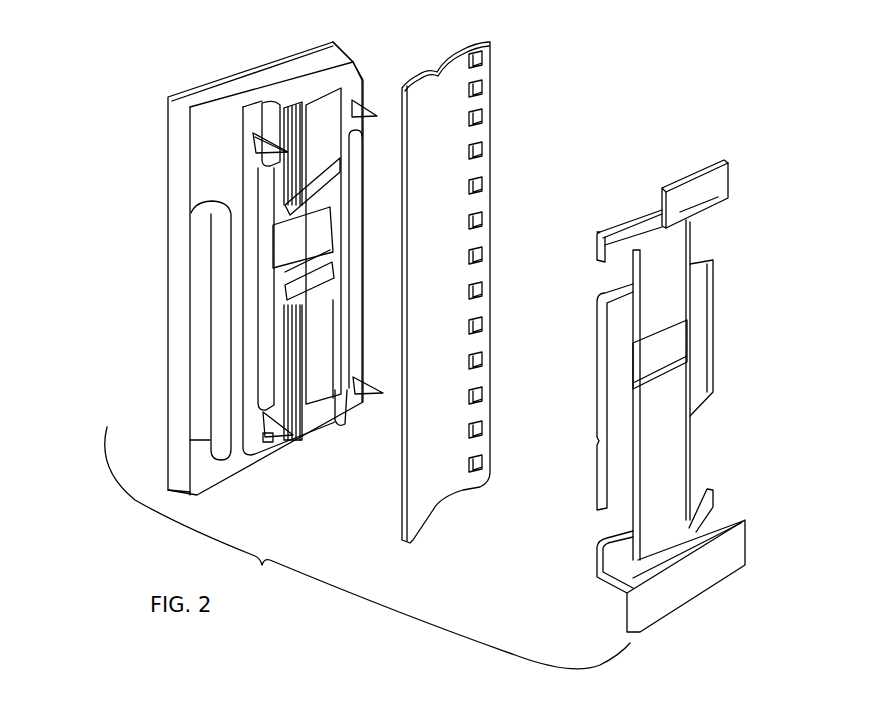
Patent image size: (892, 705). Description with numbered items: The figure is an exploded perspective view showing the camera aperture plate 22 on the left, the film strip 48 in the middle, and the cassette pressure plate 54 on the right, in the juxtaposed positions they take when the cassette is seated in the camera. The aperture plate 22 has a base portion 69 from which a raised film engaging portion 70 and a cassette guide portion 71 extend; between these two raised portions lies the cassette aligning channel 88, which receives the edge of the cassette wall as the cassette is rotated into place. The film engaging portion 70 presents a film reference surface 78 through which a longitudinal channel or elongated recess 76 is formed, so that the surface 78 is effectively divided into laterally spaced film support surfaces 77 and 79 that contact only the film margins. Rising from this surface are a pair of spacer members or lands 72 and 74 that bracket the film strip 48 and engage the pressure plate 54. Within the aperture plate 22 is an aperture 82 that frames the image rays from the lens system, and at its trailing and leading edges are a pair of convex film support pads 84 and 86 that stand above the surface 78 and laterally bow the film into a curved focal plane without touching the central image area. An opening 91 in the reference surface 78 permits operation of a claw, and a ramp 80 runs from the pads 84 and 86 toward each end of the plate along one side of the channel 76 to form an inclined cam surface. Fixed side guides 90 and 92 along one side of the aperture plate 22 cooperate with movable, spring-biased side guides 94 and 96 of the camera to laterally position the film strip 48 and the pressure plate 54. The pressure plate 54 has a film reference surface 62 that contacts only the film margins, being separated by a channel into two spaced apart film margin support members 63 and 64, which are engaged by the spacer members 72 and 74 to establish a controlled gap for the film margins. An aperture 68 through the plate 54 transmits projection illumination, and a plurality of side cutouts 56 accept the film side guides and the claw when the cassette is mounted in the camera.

The aperture plate 22 is at (217, 72).
The base portion 69 is at (178, 160).
The cassette guide portion 71 is at (200, 233).
The cassette aligning channel 88 is at (238, 270).
The spacer member 72 is at (267, 387).
The film support surface 77 is at (267, 117).
The movable side guide 96 is at (254, 142).
The ramp 80 is at (290, 110).
The aperture 82 is at (323, 232).
The film support pad 84 is at (310, 267).
The film engaging portion 70 is at (313, 83).
The film support pad 86 is at (345, 178).
The spacer member 74 is at (363, 331).
The film support surface 79 is at (360, 78).
The film reference surface 78 is at (360, 36).
The fixed side guide 92 is at (363, 98).
The fixed side guide 90 is at (360, 383).
The opening 91 is at (340, 426).
The longitudinal channel 76 is at (315, 402).
The movable side guide 94 is at (273, 435).
The film strip 48 is at (497, 164).
The film margin support member 64 is at (448, 308).
The pressure plate 54 is at (692, 163).
The film reference surface 62 is at (598, 395).
The film margin support member 63 is at (597, 357).
The side cutout 56 is at (500, 0).
The aperture 68 is at (663, 370).